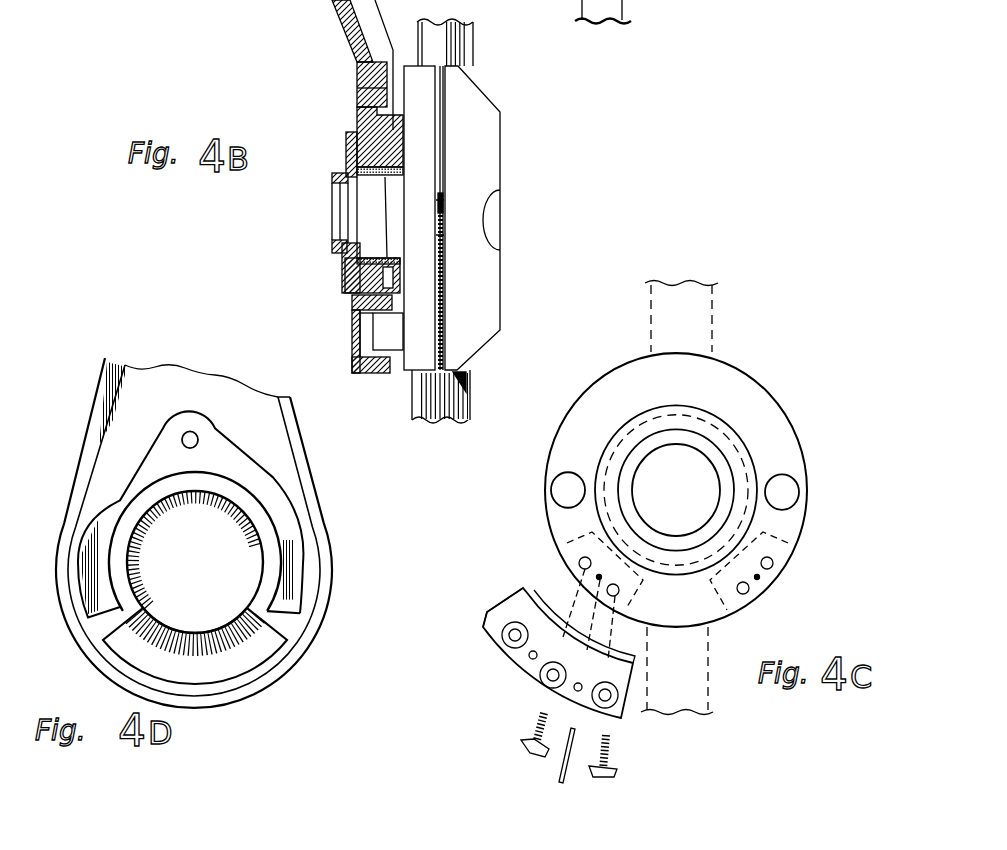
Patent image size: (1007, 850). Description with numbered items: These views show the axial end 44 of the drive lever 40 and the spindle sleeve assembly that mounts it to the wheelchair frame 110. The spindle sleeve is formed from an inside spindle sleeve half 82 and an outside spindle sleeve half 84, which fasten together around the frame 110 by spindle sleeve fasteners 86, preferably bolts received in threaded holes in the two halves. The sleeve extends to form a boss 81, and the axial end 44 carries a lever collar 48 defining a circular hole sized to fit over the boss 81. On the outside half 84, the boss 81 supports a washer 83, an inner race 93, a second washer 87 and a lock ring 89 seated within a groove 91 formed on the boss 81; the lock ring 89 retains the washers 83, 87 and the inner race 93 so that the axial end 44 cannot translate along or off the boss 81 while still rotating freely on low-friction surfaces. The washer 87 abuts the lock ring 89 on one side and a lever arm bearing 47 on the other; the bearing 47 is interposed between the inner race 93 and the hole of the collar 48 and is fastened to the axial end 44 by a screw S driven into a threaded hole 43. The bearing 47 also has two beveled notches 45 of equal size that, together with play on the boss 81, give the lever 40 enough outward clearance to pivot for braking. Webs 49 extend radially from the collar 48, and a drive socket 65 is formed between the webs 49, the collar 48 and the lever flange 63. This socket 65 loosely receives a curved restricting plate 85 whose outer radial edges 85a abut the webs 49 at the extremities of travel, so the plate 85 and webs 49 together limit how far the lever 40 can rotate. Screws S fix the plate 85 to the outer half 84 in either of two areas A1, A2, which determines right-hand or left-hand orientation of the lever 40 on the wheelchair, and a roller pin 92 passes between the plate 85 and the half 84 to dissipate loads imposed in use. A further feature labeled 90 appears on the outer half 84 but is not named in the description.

In FIG. 4B, the lever 40 is at (373, 38).
In FIG. 4D, the lever 40 is at (130, 395).
In FIG. 4B, the threaded hole 43 is at (375, 97).
In FIG. 4D, the threaded hole 43 is at (182, 438).
In FIG. 4D, the axial end 44 is at (356, 498).
In FIG. 4B, the beveled notches 45 is at (357, 133).
In FIG. 4B, the lever arm bearing 47 is at (360, 298).
In FIG. 4D, the lever collar 48 is at (268, 563).
In FIG. 4D, the webs 49 is at (278, 625).
In FIG. 4D, the lever flange 63 is at (272, 667).
In FIG. 4D, the drive socket 65 is at (218, 673).
In FIG. 4B, the boss 81 is at (340, 182).
In FIG. 4B, the inside spindle sleeve half 82 is at (472, 108).
In FIG. 4B, the washer 83 is at (400, 147).
In FIG. 4C, the outside spindle sleeve half 84 is at (717, 380).
In FIG. 4B, the restricting plate 85 is at (387, 335).
In FIG. 4C, the restricting plate 85 is at (532, 670).
In FIG. 4C, the outer radial edges 85a is at (497, 608).
In FIG. 4B, the spindle sleeve fasteners 86 is at (422, 220).
In FIG. 4C, the spindle sleeve fasteners 86 is at (783, 490).
In FIG. 4B, the washer 87 is at (355, 273).
In FIG. 4B, the lock ring 89 is at (343, 258).
In FIG. 4C, the bore 90 is at (710, 452).
In FIG. 4C, the groove 91 is at (742, 462).
In FIG. 4C, the roller pin 92 is at (560, 767).
In FIG. 4B, the inner race 93 is at (433, 217).
In FIG. 4B, the frame 110 is at (436, 54).
In FIG. 4C, the frame 110 is at (685, 330).
In FIG. 4C, the area A1 is at (580, 550).
In FIG. 4C, the area A2 is at (773, 550).
In FIG. 4C, the screw S is at (522, 740).